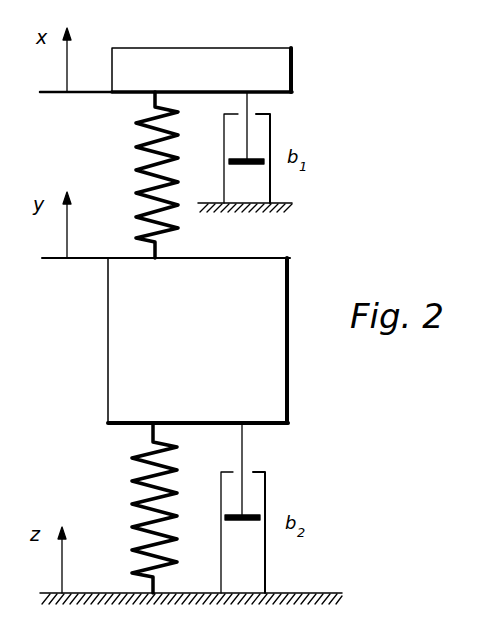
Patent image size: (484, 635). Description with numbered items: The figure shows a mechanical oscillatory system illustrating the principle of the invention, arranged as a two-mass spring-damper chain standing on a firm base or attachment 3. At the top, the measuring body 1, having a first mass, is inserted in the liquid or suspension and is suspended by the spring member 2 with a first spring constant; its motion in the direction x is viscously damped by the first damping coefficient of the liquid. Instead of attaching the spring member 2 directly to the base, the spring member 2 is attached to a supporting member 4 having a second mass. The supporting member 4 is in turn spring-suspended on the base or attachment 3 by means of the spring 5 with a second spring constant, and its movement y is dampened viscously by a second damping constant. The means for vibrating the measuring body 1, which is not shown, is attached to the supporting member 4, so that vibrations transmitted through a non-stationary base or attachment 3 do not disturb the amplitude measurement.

The measuring body 1 is at (280, 63).
The spring member 2 is at (142, 118).
The base or attachment 3 is at (300, 600).
The supporting member 4 is at (272, 322).
The spring 5 is at (142, 452).